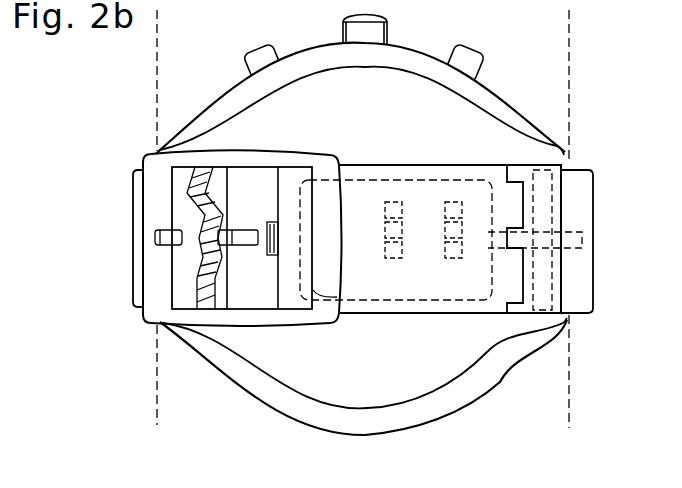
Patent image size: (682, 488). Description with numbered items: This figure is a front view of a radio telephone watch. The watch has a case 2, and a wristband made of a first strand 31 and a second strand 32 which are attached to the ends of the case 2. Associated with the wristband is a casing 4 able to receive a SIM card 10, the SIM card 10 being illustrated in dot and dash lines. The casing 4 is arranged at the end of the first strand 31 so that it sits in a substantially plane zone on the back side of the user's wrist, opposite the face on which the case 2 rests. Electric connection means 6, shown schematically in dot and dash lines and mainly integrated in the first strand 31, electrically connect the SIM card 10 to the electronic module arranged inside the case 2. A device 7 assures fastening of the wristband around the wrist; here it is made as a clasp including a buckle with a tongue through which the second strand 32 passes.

The case 2 is at (227, 98).
The casing 4 is at (393, 172).
The electric connection means 6 is at (568, 232).
The device 7 is at (155, 298).
The SIM card 10 is at (425, 313).
The first strand 31 is at (584, 166).
The second strand 32 is at (140, 164).